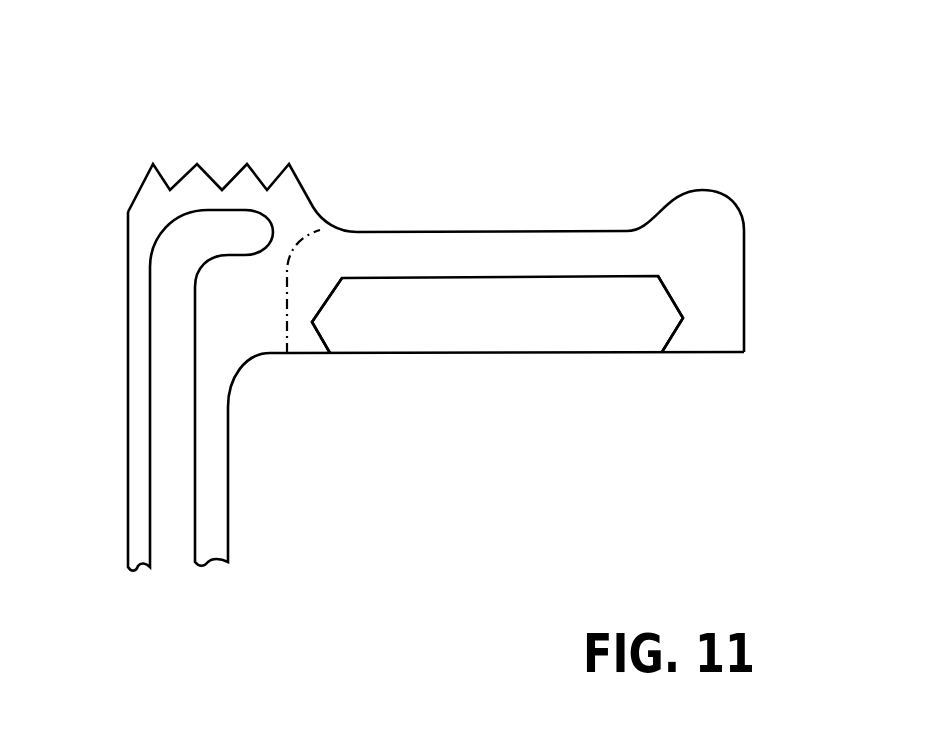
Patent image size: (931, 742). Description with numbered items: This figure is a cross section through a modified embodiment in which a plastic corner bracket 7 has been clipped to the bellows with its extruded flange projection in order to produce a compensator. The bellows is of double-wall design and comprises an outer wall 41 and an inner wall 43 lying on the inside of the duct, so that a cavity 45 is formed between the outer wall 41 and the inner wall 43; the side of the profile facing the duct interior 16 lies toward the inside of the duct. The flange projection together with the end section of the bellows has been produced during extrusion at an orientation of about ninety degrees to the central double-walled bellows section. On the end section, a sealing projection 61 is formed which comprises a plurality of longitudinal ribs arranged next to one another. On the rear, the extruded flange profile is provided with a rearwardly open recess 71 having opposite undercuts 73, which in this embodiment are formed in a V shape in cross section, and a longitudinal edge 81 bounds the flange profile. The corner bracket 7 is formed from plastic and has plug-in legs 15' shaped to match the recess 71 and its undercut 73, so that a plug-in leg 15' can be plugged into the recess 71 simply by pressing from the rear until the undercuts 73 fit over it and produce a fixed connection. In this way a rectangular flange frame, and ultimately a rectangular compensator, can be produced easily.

The sealing projection 61 is at (217, 131).
The recess 71 is at (480, 286).
The longitudinal edge 81 is at (747, 343).
The cavity 45 is at (163, 418).
The inner wall 43 is at (140, 502).
The outer wall 41 is at (212, 520).
The undercut 73 is at (326, 326).
The corner bracket 7 is at (447, 329).
The plug-in leg 15' is at (497, 372).
The duct interior 16 is at (442, 554).